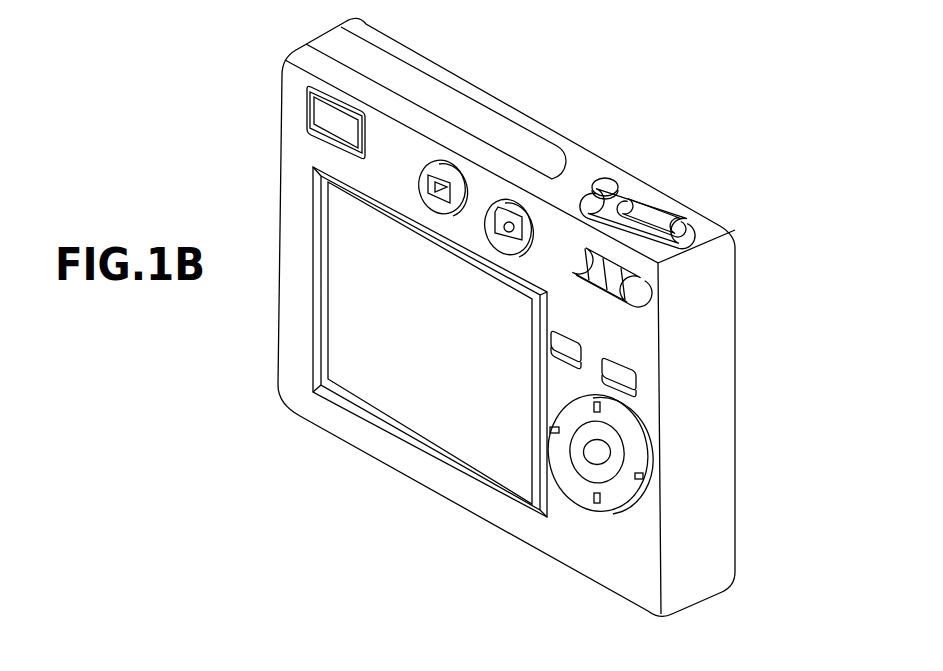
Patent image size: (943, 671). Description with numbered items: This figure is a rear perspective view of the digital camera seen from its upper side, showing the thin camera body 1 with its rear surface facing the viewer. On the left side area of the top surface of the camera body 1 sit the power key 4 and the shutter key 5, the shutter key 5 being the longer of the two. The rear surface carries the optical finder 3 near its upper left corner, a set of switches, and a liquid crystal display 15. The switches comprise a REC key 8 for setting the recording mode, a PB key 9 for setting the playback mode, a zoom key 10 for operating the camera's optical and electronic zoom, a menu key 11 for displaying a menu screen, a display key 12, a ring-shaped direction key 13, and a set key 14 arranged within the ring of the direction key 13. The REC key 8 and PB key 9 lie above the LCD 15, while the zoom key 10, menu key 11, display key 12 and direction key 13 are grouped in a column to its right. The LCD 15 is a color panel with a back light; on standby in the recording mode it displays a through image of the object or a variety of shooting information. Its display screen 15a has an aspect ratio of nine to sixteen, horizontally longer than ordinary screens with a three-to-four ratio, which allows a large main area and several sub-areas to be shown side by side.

The camera body 1 is at (408, 46).
The optical finder 3 is at (333, 122).
The power key 4 is at (606, 184).
The shutter key 5 is at (652, 208).
The REC key 8 is at (517, 207).
The PB key 9 is at (441, 168).
The zoom key 10 is at (637, 300).
The menu key 11 is at (588, 353).
The display key 12 is at (640, 385).
The direction key 13 is at (627, 440).
The set key 14 is at (598, 457).
The liquid crystal display 15 is at (430, 347).
The display screen 15a is at (511, 449).